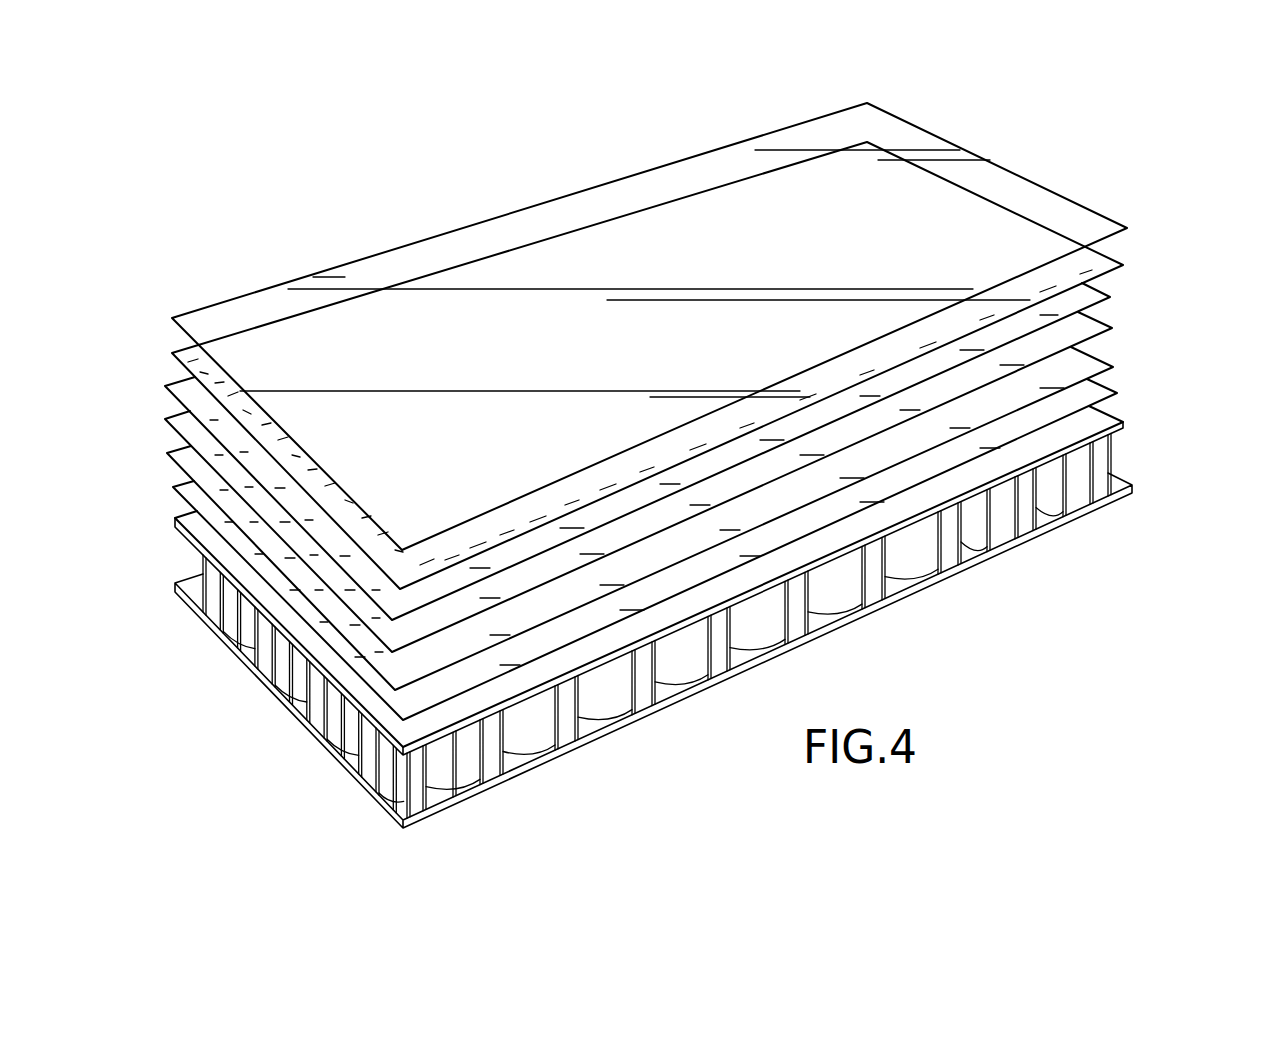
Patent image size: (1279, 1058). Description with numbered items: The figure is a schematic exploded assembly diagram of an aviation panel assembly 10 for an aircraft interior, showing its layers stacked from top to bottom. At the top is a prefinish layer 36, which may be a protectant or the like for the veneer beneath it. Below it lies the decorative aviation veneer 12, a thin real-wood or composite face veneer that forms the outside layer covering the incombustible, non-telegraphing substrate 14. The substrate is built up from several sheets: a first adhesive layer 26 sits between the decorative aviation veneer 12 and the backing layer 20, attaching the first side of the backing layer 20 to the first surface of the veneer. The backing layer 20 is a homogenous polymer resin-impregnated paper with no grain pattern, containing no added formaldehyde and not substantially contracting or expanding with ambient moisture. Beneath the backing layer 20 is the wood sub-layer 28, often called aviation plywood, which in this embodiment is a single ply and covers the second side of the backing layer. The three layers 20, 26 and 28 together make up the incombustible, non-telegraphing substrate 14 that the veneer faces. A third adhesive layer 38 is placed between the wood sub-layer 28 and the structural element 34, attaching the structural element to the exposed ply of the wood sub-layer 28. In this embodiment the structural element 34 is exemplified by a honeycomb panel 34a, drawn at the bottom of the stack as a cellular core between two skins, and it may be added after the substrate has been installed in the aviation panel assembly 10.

The aviation panel assembly 10 is at (416, 124).
The prefinish layer 36 is at (1127, 228).
The decorative aviation veneer 12 is at (1123, 265).
The first adhesive layer 26 is at (1110, 297).
The backing layer 20 is at (1112, 328).
The wood sub-layer 28 is at (1113, 367).
The incombustible, non-telegraphing substrate 14 is at (713, 486).
The third adhesive layer 38 is at (1117, 393).
The structural element 34 is at (725, 617).
The honeycomb panel 34a is at (1123, 422).